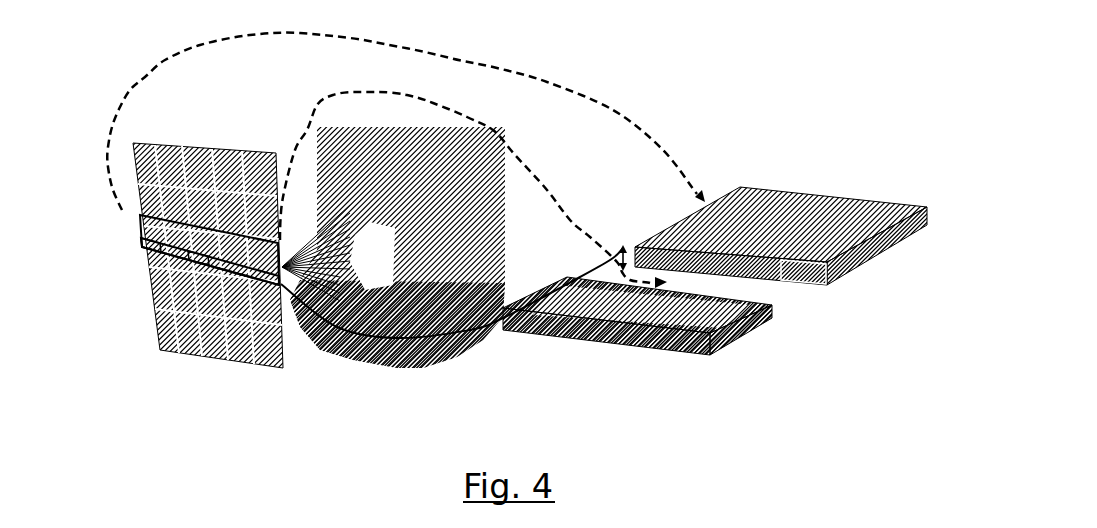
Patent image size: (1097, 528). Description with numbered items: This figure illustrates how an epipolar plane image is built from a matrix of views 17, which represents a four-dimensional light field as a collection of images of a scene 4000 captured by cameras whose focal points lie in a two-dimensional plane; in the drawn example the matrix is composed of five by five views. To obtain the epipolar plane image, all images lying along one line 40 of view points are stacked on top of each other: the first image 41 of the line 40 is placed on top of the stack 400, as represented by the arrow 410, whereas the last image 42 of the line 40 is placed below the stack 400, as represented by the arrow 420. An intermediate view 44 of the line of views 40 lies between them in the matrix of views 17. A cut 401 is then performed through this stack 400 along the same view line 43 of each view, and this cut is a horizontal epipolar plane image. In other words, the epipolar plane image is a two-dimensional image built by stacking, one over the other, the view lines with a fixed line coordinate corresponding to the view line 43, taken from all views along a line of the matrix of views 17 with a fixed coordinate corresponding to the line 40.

The matrix of views 17 is at (195, 143).
The line of view points 40 is at (140, 218).
The first image 41 is at (142, 232).
The last image 42 is at (279, 284).
The view line 43 is at (140, 238).
The intermediate view 44 is at (205, 250).
The stack 400 is at (927, 222).
The cut 401 is at (827, 282).
The arrow 410 is at (547, 82).
The arrow 420 is at (548, 188).
The scene 4000 is at (470, 366).